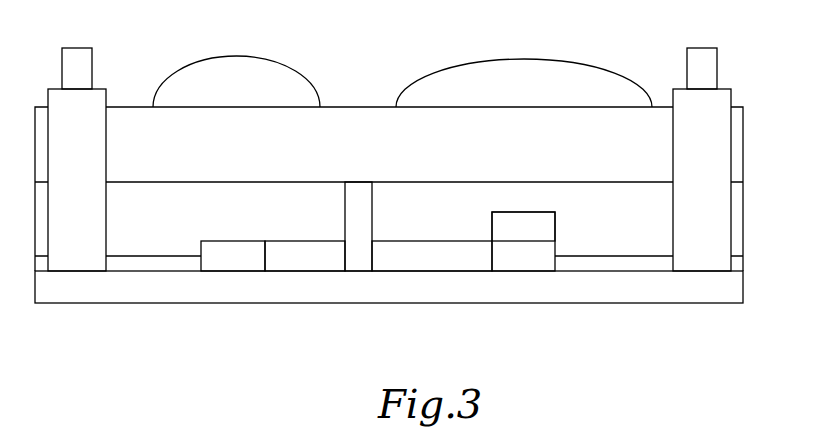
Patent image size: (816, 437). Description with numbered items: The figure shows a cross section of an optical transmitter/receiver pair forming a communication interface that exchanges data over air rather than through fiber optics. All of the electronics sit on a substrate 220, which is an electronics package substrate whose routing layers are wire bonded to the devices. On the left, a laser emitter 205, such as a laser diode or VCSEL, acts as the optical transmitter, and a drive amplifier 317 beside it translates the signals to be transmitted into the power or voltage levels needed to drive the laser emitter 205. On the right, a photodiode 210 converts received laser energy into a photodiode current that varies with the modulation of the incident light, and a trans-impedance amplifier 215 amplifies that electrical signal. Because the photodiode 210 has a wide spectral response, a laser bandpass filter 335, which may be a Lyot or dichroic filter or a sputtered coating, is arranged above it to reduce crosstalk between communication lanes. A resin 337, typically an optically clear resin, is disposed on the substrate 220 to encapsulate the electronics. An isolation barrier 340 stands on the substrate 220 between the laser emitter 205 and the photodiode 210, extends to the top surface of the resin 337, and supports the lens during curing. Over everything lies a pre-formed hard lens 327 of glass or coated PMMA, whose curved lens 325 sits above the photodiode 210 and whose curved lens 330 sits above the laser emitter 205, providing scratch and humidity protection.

The laser emitter 205 is at (223, 262).
The photodiode 210 is at (524, 262).
The trans-impedance amplifier 215 is at (432, 262).
The substrate 220 is at (743, 283).
The drive amplifier 317 is at (315, 262).
The lens 325 is at (524, 59).
The lens 327 is at (743, 120).
The lens 330 is at (238, 56).
The laser bandpass filter 335 is at (555, 225).
The resin 337 is at (743, 194).
The isolation barrier 340 is at (357, 263).